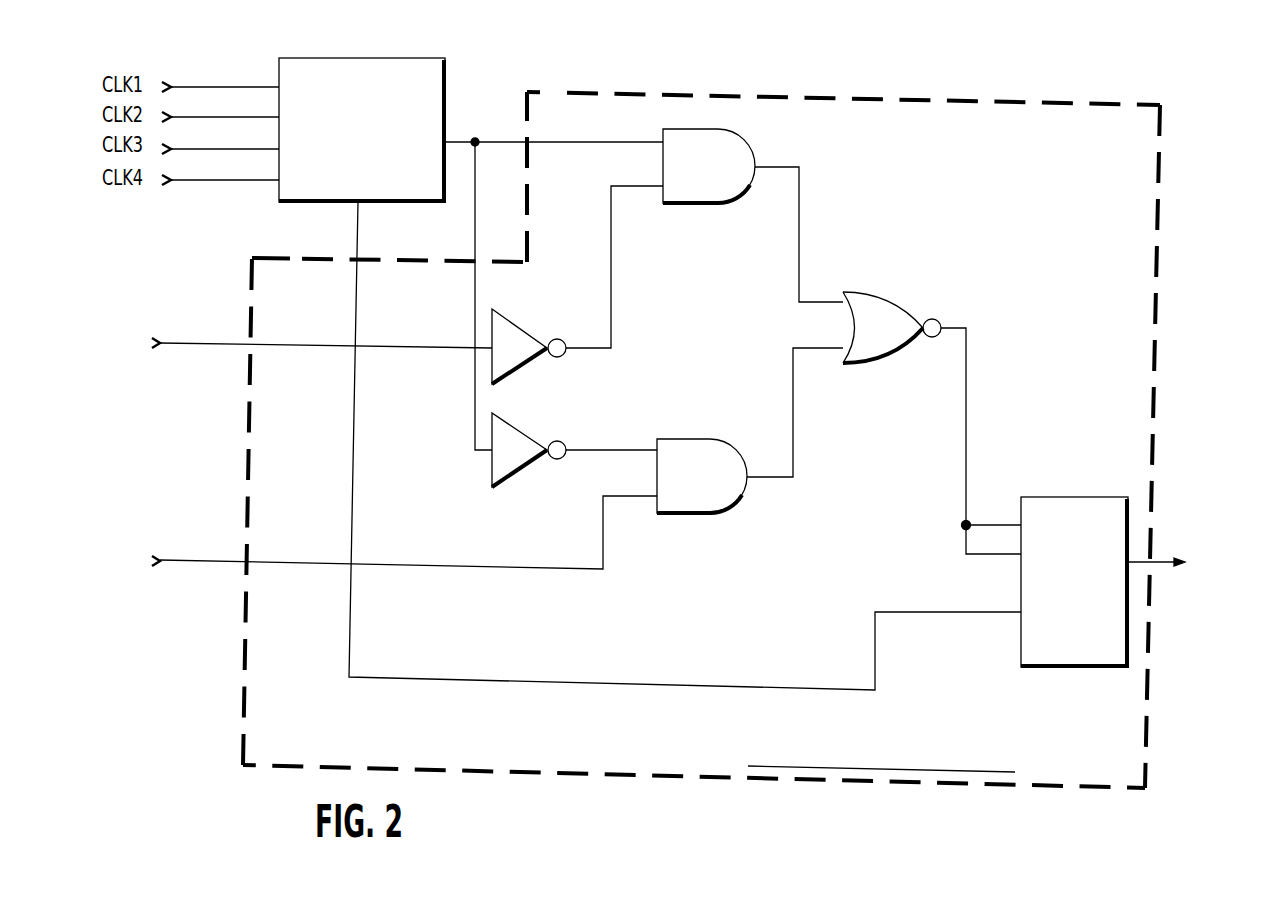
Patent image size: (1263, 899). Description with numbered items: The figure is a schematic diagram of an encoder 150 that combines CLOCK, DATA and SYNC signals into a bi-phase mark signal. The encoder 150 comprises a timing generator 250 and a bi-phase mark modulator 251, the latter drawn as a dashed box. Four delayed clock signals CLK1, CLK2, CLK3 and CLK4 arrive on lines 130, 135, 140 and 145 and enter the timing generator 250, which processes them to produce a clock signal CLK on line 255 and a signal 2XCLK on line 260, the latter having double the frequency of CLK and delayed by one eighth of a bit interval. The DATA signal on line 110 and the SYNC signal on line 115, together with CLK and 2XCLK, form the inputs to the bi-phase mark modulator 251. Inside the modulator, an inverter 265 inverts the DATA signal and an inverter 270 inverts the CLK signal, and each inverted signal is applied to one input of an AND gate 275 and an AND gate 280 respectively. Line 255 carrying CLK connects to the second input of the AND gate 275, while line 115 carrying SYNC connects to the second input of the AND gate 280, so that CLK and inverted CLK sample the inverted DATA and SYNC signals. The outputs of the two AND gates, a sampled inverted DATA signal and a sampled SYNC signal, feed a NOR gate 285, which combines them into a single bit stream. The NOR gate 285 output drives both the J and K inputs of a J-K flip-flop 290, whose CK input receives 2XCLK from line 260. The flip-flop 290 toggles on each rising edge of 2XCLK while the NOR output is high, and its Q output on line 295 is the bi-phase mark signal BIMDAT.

The line 110 is at (208, 340).
The line 115 is at (215, 560).
The line 130 is at (178, 88).
The line 135 is at (180, 118).
The line 140 is at (180, 149).
The line 145 is at (180, 180).
The encoder 150 is at (143, 709).
The timing generator 250 is at (413, 78).
The bi-phase mark modulator 251 is at (1132, 752).
The line 255 is at (565, 142).
The line 260 is at (357, 302).
The inverter 265 is at (515, 352).
The inverter 270 is at (528, 467).
The AND gate 275 is at (728, 188).
The AND gate 280 is at (730, 458).
The NOR gate 285 is at (890, 348).
The J-K flip-flop 290 is at (1095, 515).
The line 295 is at (1165, 567).